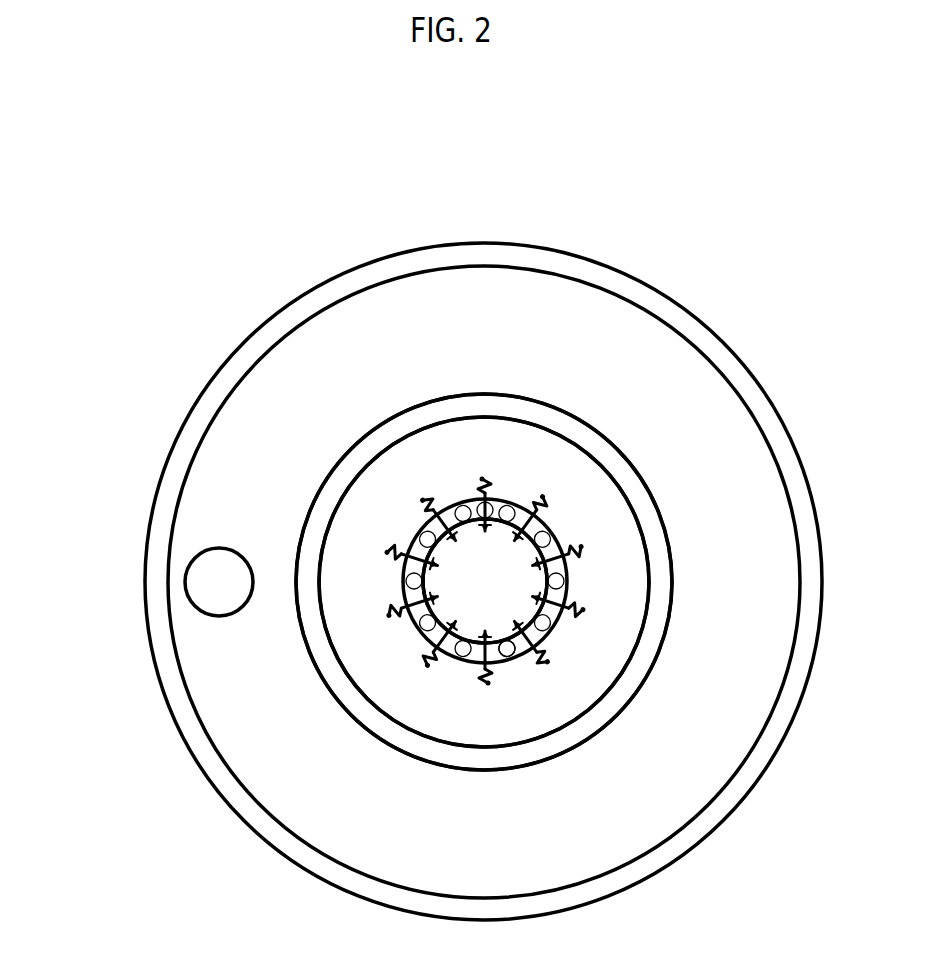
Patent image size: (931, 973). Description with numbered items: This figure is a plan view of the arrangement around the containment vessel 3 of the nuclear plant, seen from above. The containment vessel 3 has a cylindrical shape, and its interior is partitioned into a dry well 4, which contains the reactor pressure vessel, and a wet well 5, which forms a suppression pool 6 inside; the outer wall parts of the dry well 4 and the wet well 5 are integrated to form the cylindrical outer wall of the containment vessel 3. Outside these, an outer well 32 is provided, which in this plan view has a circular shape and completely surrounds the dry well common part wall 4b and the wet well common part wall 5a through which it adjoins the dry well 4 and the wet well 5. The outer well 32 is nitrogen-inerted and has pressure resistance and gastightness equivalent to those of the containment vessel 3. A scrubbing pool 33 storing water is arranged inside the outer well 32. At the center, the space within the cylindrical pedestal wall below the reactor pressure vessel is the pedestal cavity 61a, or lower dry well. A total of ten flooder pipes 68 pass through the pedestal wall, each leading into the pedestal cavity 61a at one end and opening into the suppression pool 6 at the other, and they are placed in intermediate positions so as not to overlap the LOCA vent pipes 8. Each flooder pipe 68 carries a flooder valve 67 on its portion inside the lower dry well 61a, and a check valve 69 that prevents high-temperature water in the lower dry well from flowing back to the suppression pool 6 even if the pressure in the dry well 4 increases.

The outer well 32 is at (267, 387).
The scrubbing pool 33 is at (198, 590).
The dry well 4 is at (539, 582).
The wet well 5 is at (539, 582).
The suppression pool 6 is at (612, 627).
The dry well common part wall 4b is at (448, 597).
The wet well common part wall 5a is at (322, 652).
The containment vessel 3 is at (654, 465).
The flooder valve 67 is at (457, 645).
The pedestal cavity 61a is at (492, 588).
The check valve 69 is at (430, 506).
The flooder pipe 68 is at (445, 510).
The LOCA vent pipe 8 is at (503, 650).